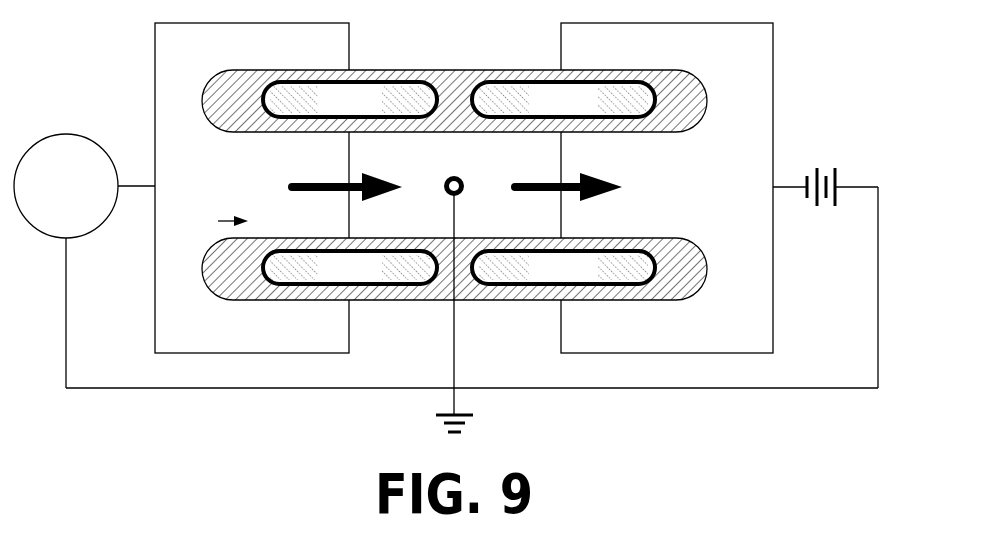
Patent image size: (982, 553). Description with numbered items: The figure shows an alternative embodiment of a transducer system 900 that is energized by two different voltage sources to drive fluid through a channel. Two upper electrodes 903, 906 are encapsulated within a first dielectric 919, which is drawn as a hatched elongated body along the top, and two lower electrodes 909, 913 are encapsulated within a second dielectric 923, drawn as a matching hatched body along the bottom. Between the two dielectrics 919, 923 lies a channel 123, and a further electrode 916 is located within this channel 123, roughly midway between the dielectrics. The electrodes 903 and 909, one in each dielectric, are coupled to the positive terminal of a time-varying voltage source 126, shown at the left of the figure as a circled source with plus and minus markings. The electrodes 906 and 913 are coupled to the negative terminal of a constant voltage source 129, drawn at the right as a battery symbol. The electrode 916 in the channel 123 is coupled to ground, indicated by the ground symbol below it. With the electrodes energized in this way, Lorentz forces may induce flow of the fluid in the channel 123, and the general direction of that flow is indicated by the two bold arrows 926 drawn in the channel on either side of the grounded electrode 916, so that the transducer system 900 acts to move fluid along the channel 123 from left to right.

The transducer system 900 is at (709, 305).
The electrode 903 is at (330, 110).
The electrode 906 is at (543, 110).
The electrode 909 is at (330, 278).
The electrode 913 is at (543, 278).
The electrode 916 is at (459, 191).
The first dielectric 919 is at (245, 133).
The second dielectric 923 is at (253, 302).
The arrows 926 is at (537, 182).
The channel 123 is at (212, 222).
The time-varying voltage source 126 is at (25, 218).
The constant voltage source 129 is at (824, 176).